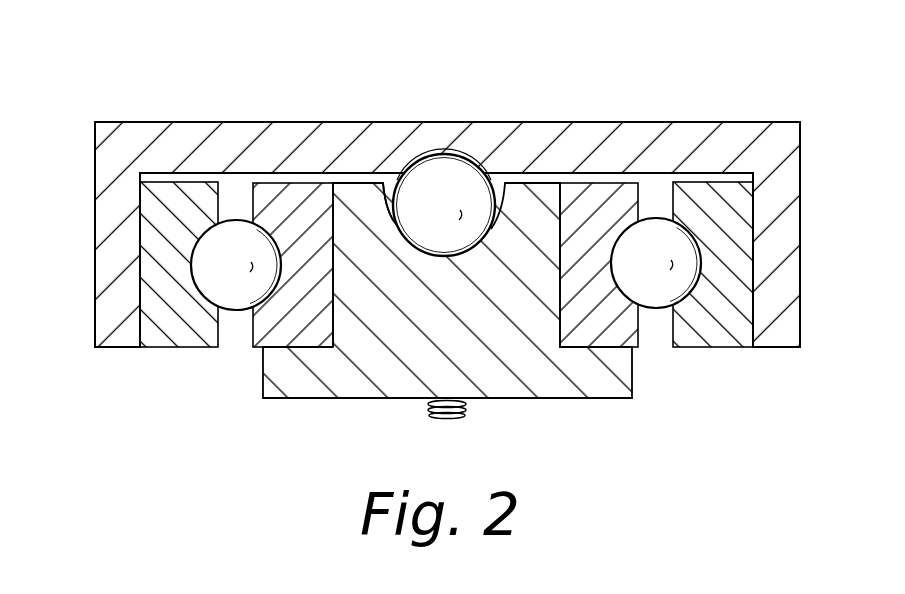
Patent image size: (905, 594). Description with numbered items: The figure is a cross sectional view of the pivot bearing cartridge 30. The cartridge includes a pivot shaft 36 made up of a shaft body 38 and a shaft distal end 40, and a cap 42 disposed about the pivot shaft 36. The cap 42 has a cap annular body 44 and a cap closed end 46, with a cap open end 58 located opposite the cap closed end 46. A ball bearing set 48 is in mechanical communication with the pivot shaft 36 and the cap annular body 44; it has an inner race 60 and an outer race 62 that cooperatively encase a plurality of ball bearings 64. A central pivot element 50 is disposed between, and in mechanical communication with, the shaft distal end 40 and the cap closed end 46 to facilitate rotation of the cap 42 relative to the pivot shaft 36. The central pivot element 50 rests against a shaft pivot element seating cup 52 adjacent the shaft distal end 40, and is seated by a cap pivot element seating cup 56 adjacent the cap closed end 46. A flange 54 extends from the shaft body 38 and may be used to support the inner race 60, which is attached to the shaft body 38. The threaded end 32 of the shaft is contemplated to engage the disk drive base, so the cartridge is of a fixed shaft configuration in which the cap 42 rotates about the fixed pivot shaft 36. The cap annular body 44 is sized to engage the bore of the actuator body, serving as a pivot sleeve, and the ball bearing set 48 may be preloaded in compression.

The pivot bearing cartridge 30 is at (250, 80).
The threaded end 32 is at (449, 419).
The pivot shaft 36 is at (447, 318).
The shaft body 38 is at (467, 300).
The shaft distal end 40 is at (533, 208).
The cap 42 is at (718, 132).
The cap annular body 44 is at (798, 285).
The cap closed end 46 is at (623, 133).
The ball bearing set 48 is at (236, 310).
The central pivot element 50 is at (448, 170).
The shaft pivot element seating cup 52 is at (386, 226).
The flange 54 is at (617, 367).
The cap pivot element seating cup 56 is at (416, 152).
The cap open end 58 is at (775, 356).
The inner race 60 is at (258, 328).
The outer race 62 is at (192, 337).
The ball bearings 64 is at (210, 267).